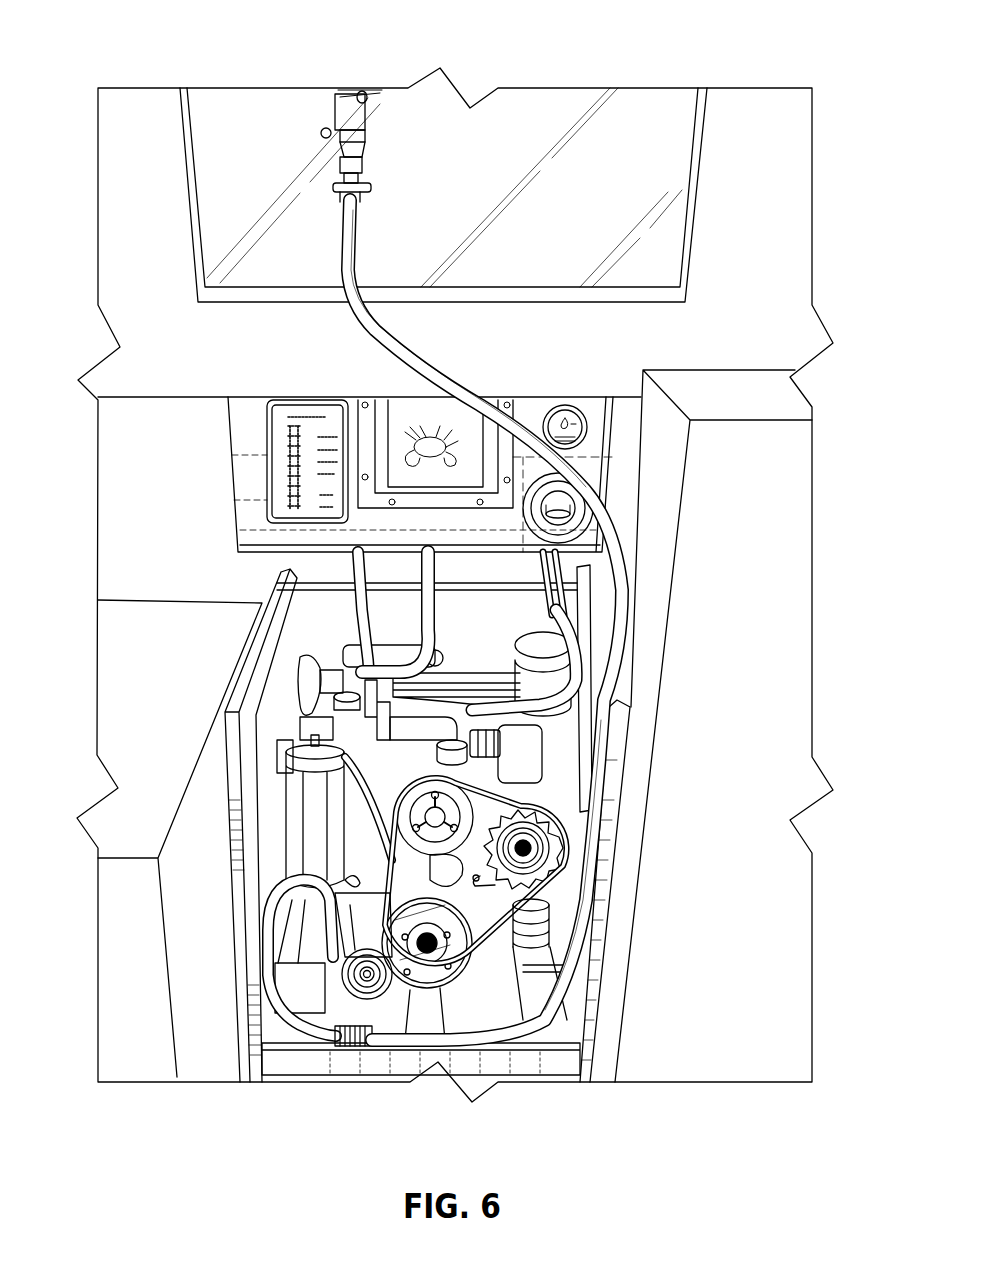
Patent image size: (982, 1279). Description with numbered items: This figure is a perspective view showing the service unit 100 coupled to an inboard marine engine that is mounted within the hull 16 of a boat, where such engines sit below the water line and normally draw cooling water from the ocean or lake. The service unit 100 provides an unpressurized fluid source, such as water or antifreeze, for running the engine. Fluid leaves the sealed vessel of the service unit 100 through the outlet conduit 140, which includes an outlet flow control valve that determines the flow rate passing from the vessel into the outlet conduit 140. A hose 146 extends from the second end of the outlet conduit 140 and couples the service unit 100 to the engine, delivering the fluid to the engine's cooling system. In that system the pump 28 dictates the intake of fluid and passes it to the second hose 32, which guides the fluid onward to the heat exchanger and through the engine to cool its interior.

The service unit 100 is at (386, 79).
The outlet conduit 140 is at (348, 110).
The hose 146 is at (470, 398).
The pump 28 is at (367, 834).
The second hose 32 is at (312, 1028).
The hull 16 is at (605, 1083).